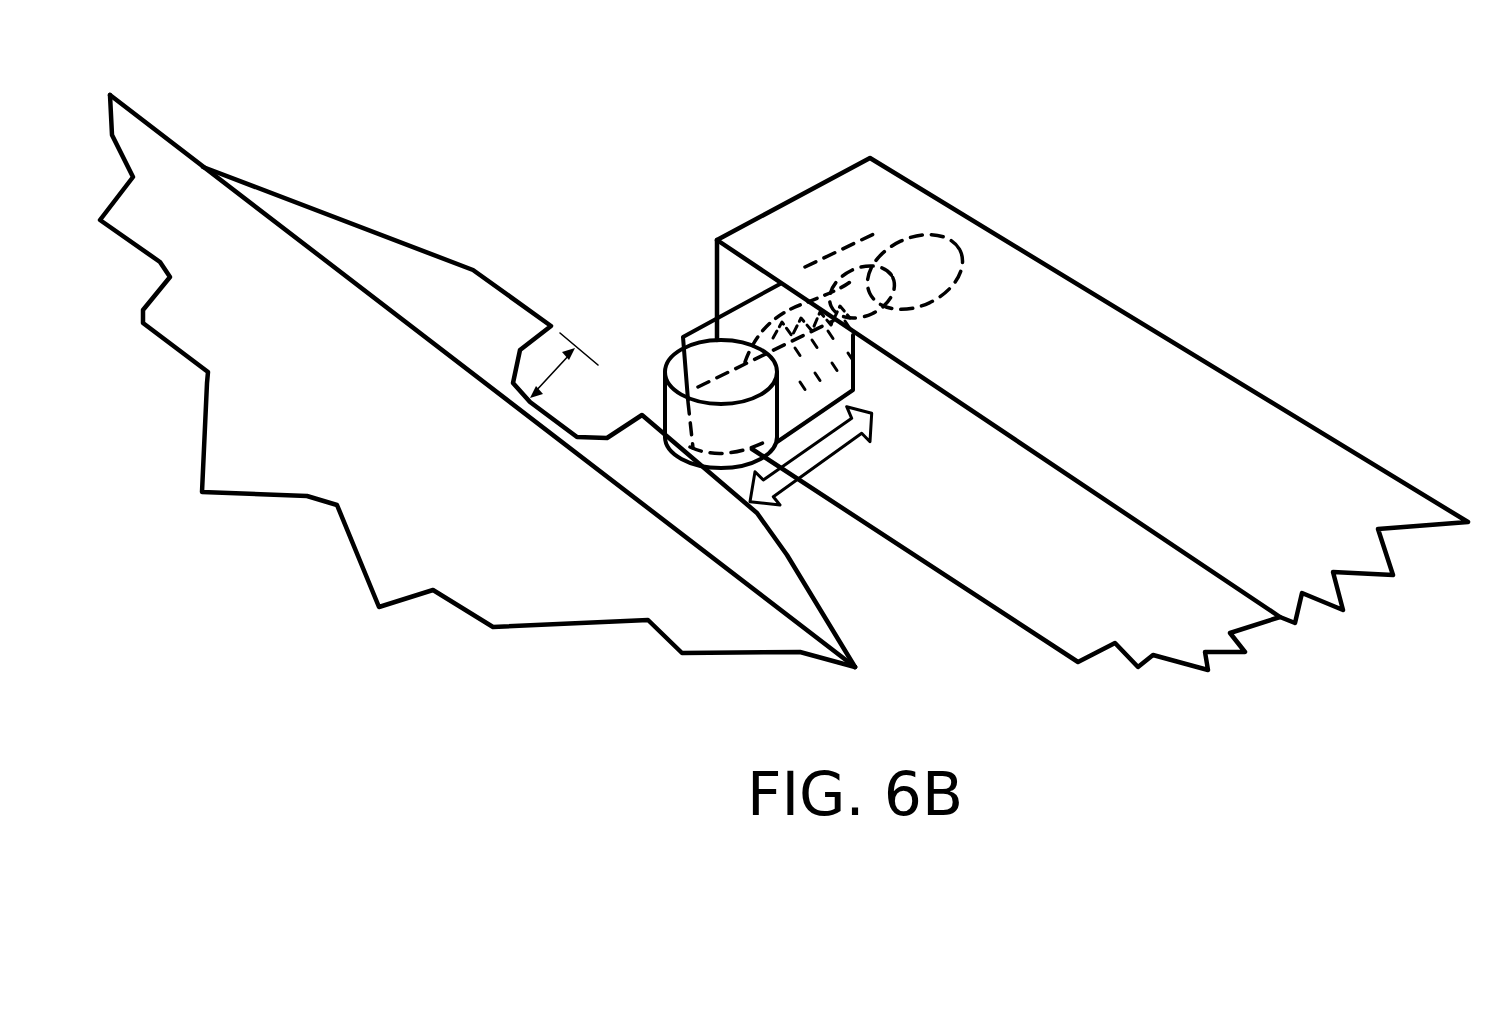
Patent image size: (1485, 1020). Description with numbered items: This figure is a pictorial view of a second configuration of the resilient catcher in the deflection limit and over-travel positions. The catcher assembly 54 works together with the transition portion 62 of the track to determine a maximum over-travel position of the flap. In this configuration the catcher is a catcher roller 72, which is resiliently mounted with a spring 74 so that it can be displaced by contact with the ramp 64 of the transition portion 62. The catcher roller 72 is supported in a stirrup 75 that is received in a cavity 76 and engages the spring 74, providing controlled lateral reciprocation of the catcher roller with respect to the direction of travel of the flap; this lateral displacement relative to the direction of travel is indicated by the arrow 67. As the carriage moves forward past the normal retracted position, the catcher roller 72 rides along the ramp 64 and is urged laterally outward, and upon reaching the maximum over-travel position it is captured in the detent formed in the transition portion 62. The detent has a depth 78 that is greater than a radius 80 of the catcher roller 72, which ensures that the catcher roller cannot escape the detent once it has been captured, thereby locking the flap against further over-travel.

The catcher assembly 54 is at (952, 200).
The transition portion 62 is at (683, 493).
The ramp 64 is at (785, 558).
The arrow 67 is at (820, 455).
The catcher roller 72 is at (662, 363).
The spring 74 is at (873, 262).
The stirrup 75 is at (718, 345).
The cavity 76 is at (805, 262).
The depth 78 is at (553, 382).
The radius 80 is at (690, 355).